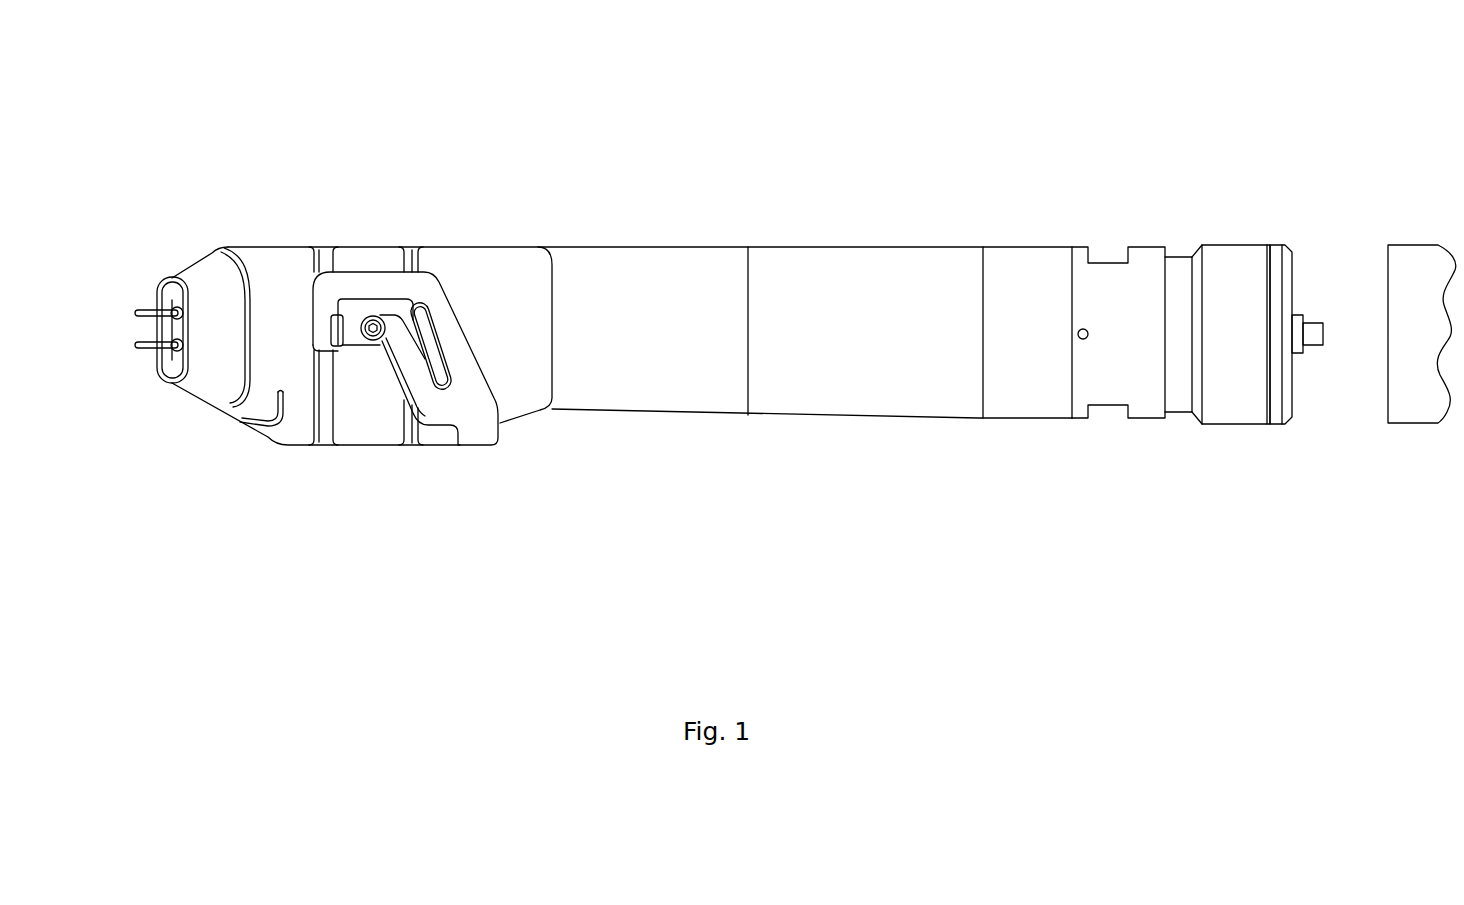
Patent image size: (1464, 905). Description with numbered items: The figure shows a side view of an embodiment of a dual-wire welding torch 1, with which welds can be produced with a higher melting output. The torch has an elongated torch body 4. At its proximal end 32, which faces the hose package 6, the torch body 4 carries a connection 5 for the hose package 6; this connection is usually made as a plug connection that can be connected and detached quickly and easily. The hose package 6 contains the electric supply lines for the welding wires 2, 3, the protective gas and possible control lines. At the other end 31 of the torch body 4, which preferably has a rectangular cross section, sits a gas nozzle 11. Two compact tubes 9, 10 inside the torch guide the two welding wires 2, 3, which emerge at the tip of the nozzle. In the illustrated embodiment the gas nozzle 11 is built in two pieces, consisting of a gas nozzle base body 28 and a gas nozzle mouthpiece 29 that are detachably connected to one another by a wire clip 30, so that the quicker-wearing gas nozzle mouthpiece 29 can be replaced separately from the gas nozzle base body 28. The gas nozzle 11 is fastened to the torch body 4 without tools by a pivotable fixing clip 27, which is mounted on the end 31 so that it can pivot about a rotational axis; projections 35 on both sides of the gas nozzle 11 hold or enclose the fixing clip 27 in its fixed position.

The dual-wire welding torch 1 is at (739, 124).
The welding wire 2 is at (140, 303).
The welding wire 3 is at (143, 350).
The torch body 4 is at (895, 317).
The connection 5 is at (1306, 292).
The hose package 6 is at (1407, 370).
The compact tube 9 is at (180, 308).
The compact tube 10 is at (179, 352).
The gas nozzle 11 is at (274, 226).
The pivotable fixing clip 27 is at (442, 405).
The gas nozzle base body 28 is at (297, 378).
The gas nozzle mouthpiece 29 is at (212, 367).
The wire clip 30 is at (274, 428).
The end of the torch body 31 is at (215, 176).
The end of the torch body 32 is at (1278, 398).
The projection 35 is at (347, 320).